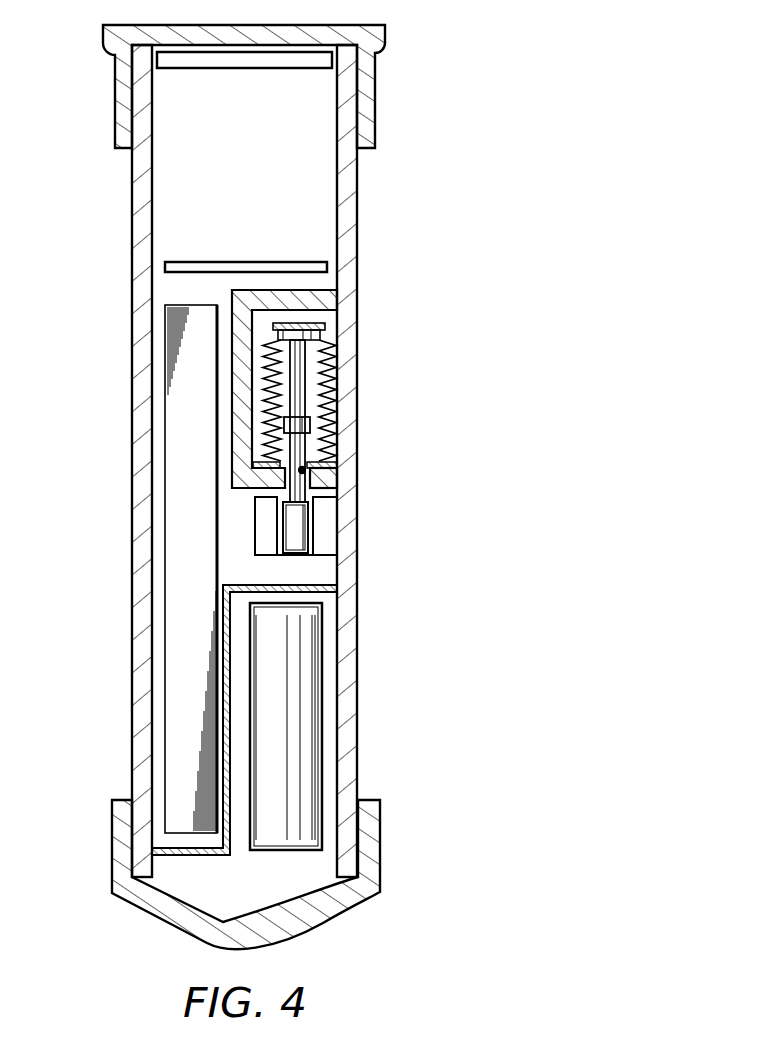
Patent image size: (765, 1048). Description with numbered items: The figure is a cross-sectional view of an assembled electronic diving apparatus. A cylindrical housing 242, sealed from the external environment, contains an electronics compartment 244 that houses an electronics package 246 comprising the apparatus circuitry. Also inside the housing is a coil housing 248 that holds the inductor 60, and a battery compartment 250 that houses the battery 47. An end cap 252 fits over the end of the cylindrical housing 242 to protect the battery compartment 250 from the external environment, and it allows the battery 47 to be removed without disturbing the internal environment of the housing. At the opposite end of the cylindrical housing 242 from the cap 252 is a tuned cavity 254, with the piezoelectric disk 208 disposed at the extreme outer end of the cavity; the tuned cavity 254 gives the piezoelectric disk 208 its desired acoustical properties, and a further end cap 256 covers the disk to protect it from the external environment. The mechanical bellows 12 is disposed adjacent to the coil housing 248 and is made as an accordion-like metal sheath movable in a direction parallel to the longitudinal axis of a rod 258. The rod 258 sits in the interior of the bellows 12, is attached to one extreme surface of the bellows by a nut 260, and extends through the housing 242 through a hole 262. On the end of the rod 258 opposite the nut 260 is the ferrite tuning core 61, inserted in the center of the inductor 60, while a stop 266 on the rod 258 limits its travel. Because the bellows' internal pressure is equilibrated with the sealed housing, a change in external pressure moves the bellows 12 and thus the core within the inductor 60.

The end cap 256 is at (389, 44).
The piezoelectric disk 208 is at (229, 71).
The tuned cavity 254 is at (198, 202).
The cylindrical housing 242 is at (130, 327).
The electronics compartment 244 is at (157, 423).
The electronics package 246 is at (177, 497).
The nut 260 is at (327, 327).
The rod 258 is at (303, 368).
The mechanical bellows 12 is at (338, 395).
The stop 266 is at (312, 423).
The hole 262 is at (304, 463).
The ferrite tuning core 61 is at (346, 503).
The inductor 60 is at (331, 526).
The coil housing 248 is at (300, 557).
The battery compartment 250 is at (332, 660).
The battery 47 is at (300, 723).
The end cap 252 is at (114, 875).